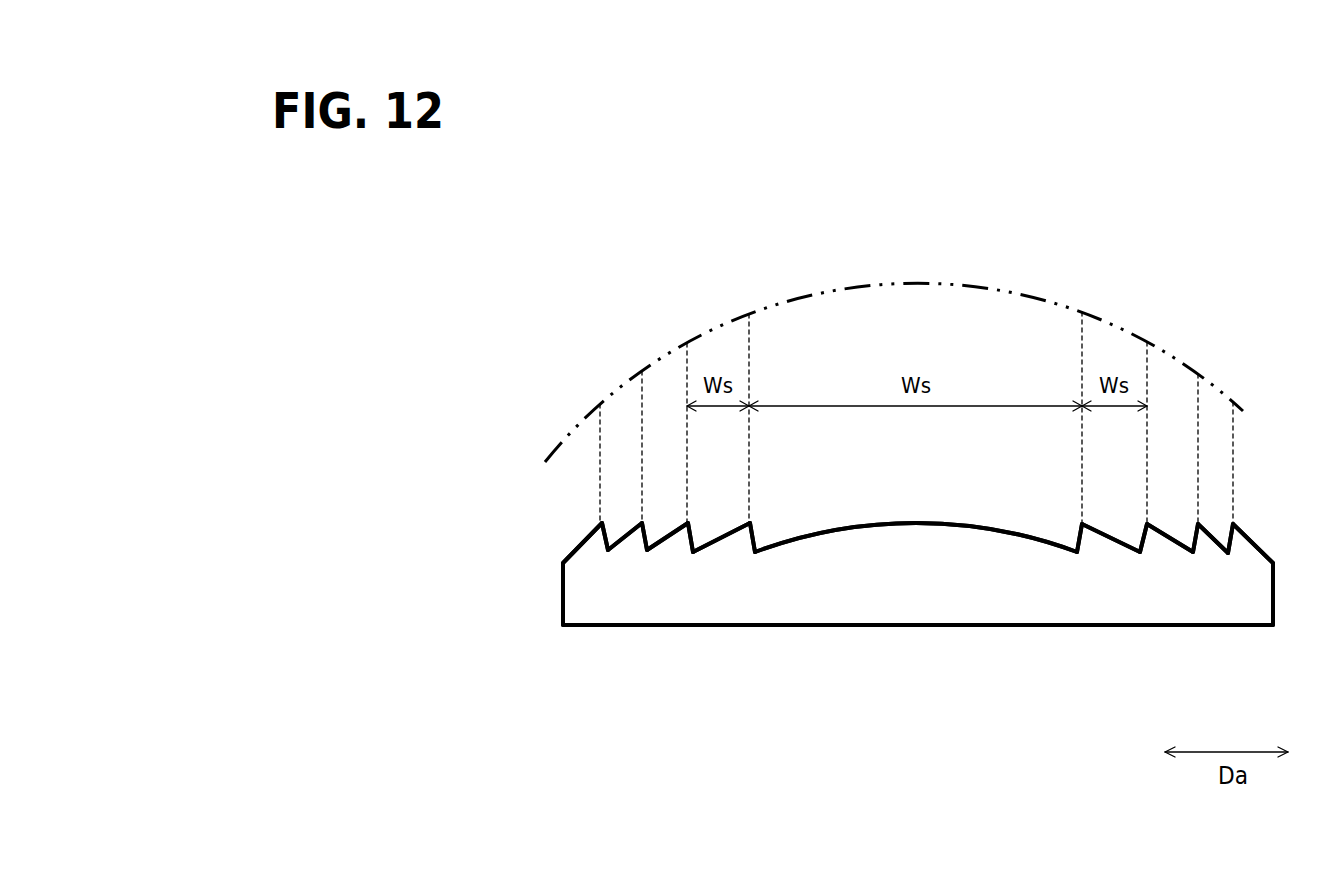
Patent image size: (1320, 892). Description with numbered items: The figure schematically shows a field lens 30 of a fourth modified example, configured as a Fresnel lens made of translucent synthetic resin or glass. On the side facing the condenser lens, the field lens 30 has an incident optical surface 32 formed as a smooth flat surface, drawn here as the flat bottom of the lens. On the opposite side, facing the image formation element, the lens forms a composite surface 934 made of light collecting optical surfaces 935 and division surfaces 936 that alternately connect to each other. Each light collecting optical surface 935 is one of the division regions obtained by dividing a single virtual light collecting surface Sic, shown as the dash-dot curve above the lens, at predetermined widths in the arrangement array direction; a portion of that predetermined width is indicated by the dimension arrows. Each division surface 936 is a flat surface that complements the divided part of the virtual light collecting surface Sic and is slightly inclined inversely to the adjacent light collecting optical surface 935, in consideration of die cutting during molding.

The field lens 30 is at (558, 585).
The incident optical surface 32 is at (632, 627).
The composite surface 934 is at (577, 538).
The light collecting optical surface 935 is at (670, 542).
The division surface 936 is at (614, 531).
The virtual light collecting surface Sic is at (770, 302).